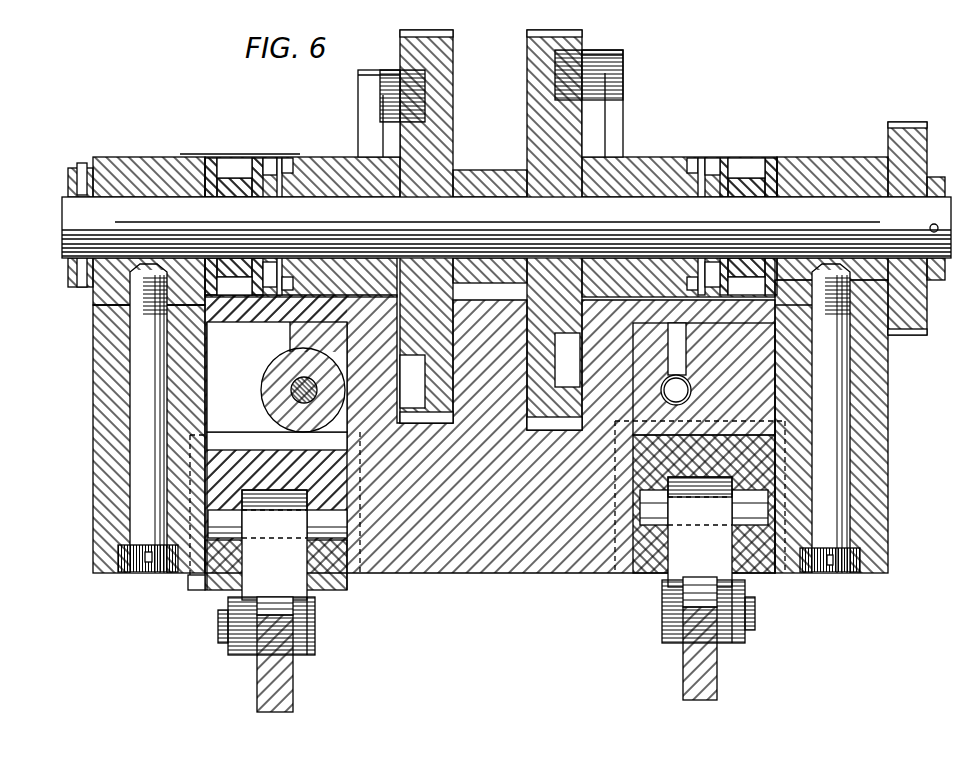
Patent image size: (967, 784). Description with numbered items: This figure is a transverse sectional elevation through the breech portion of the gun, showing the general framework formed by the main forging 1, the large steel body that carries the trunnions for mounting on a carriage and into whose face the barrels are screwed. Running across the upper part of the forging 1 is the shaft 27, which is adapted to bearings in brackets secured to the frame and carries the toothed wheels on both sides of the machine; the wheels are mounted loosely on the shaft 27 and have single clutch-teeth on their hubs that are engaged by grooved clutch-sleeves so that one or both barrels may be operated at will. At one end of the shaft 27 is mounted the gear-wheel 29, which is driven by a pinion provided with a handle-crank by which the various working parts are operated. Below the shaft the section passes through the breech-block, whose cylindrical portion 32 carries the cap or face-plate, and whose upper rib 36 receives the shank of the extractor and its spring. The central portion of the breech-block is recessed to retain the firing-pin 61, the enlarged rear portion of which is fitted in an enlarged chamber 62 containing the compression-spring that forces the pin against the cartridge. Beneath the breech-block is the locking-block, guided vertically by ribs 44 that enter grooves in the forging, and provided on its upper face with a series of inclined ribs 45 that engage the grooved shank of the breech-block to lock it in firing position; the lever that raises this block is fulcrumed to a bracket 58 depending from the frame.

The main forging 1 is at (485, 376).
The shaft 27 is at (506, 227).
The gear-wheel 29 is at (928, 302).
The cylindrical portion 32 is at (262, 383).
The upper rib 36 is at (288, 335).
The ribs 44 is at (186, 583).
The ribs 45 is at (277, 442).
The bracket 58 is at (677, 349).
The firing-pin 61 is at (262, 402).
The enlarged chamber 62 is at (676, 390).